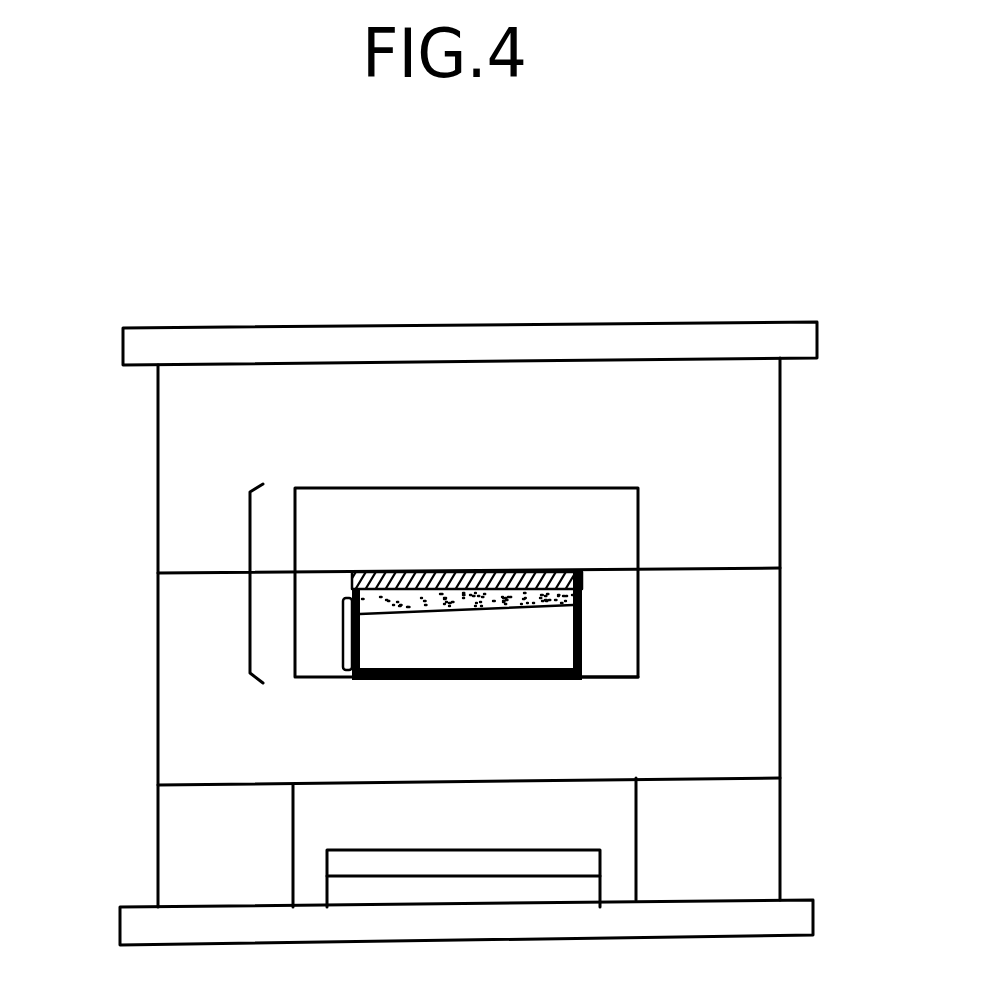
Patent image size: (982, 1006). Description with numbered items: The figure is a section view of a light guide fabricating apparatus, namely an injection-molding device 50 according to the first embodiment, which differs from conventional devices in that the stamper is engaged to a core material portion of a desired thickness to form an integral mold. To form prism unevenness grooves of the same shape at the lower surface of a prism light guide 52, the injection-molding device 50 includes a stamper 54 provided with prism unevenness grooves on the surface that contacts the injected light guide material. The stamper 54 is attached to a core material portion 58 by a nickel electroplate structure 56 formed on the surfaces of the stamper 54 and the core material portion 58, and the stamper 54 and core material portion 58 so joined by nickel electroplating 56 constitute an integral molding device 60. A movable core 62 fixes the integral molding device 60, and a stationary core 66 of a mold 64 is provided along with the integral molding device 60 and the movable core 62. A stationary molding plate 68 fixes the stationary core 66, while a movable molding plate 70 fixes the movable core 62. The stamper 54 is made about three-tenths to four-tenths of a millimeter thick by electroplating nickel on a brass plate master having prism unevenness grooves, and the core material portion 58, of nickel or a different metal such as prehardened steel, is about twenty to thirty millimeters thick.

The injection-molding device 50 is at (275, 250).
The prism light guide 52 is at (378, 570).
The stamper 54 is at (468, 607).
The nickel electroplate structure 56 is at (582, 614).
The core material portion 58 is at (546, 637).
The integral molding device 60 is at (343, 634).
The movable core 62 is at (610, 670).
The mold 64 is at (249, 595).
The stationary core 66 is at (476, 510).
The stationary molding plate 68 is at (173, 477).
The movable molding plate 70 is at (173, 694).